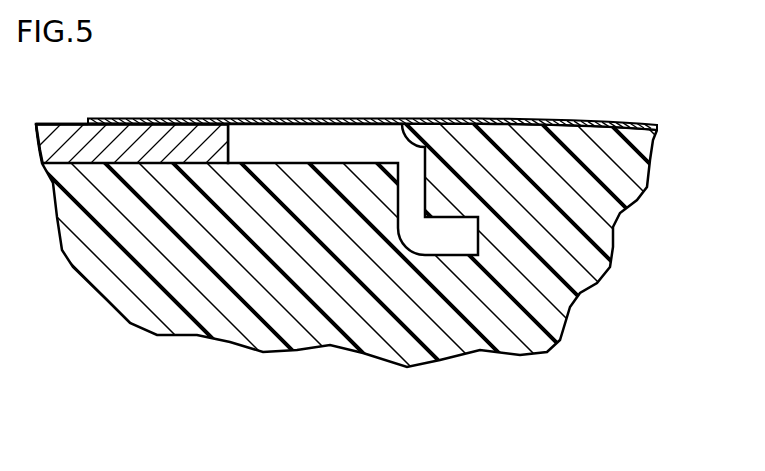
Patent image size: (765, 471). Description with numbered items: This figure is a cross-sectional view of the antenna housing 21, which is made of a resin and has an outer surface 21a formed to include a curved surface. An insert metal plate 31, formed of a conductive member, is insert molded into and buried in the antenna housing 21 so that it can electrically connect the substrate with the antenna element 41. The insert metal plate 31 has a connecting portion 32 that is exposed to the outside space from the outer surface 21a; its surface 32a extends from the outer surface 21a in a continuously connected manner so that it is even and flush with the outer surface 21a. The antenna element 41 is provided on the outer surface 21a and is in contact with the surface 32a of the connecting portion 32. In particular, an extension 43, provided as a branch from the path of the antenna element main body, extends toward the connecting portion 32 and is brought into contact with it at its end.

The antenna housing 21 is at (573, 262).
The outer surface 21a is at (492, 124).
The insert metal plate 31 is at (63, 122).
The connecting portion 32 is at (198, 140).
The surface 32a is at (152, 124).
The antenna element 41 is at (585, 118).
The extension 43 is at (328, 119).